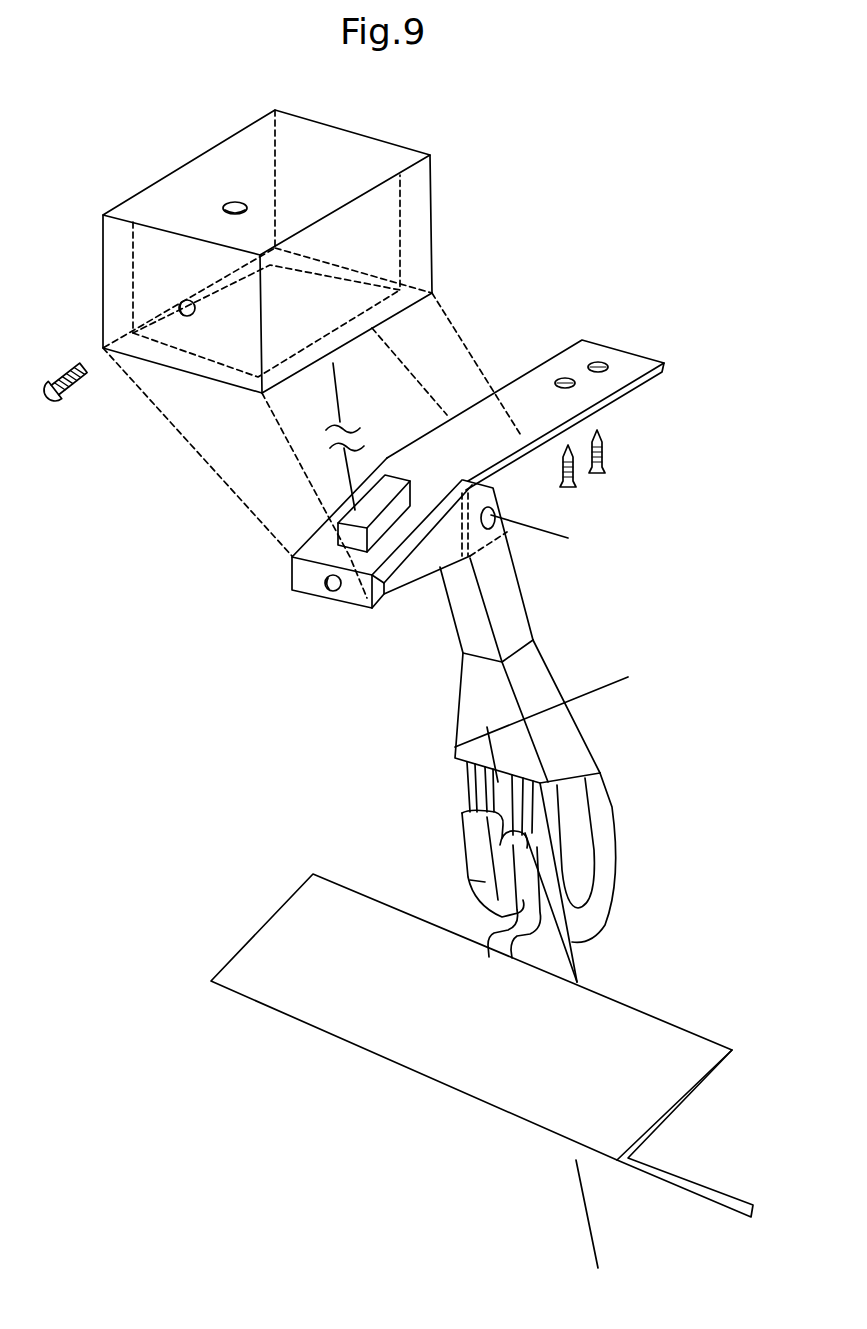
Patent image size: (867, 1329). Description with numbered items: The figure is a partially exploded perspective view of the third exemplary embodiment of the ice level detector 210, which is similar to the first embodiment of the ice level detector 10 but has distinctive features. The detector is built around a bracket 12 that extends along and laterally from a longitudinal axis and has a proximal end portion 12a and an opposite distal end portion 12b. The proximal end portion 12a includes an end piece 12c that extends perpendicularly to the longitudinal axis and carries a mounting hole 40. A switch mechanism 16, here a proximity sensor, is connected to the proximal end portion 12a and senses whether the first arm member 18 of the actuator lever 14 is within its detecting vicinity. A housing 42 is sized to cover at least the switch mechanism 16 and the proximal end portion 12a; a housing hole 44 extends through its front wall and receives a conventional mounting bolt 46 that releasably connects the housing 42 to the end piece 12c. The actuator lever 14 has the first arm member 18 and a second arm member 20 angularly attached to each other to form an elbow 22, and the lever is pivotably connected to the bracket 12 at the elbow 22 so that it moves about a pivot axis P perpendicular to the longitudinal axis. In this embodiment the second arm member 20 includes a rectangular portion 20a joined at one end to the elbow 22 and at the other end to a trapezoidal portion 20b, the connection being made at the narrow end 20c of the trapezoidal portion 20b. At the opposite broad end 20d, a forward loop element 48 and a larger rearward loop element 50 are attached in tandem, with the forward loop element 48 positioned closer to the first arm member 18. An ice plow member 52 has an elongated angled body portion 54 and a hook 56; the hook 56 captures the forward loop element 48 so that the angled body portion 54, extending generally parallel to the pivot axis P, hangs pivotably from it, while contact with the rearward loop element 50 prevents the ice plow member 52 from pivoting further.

The ice level detector 210 is at (707, 448).
The housing 42 is at (197, 183).
The housing hole 44 is at (182, 305).
The mounting bolt 46 is at (42, 400).
The bracket 12 is at (460, 418).
The proximal end portion 12a is at (315, 540).
The distal end portion 12b is at (550, 368).
The end piece 12c is at (360, 603).
The mounting hole 40 is at (333, 593).
The first arm member 18 is at (415, 574).
The switch mechanism 16 is at (388, 492).
The elbow 22 is at (510, 502).
The pivot axis P is at (562, 536).
The actuator lever 14 is at (518, 576).
The second arm member 20 is at (518, 593).
The rectangular portion 20a is at (465, 627).
The trapezoidal portion 20b is at (488, 698).
The narrow end 20c is at (506, 615).
The broad end 20d is at (553, 784).
The ice level detector 10 is at (628, 677).
The forward loop element 48 is at (465, 775).
The hook 56 is at (489, 881).
The rearward loop element 50 is at (604, 898).
The ice plow member 52 is at (304, 956).
The angled body portion 54 is at (657, 1041).